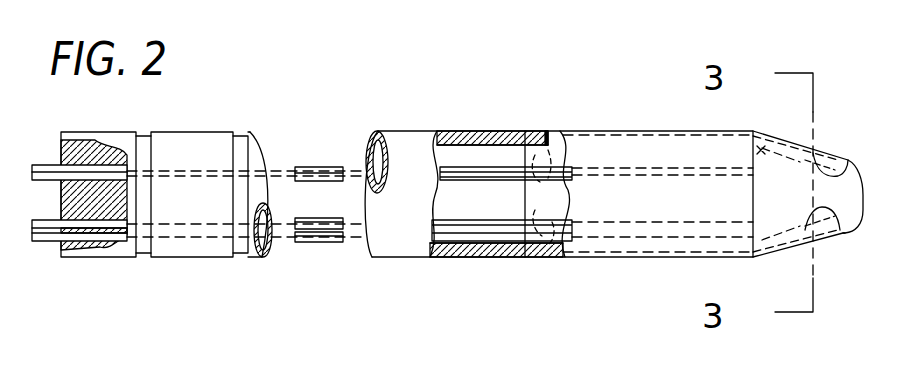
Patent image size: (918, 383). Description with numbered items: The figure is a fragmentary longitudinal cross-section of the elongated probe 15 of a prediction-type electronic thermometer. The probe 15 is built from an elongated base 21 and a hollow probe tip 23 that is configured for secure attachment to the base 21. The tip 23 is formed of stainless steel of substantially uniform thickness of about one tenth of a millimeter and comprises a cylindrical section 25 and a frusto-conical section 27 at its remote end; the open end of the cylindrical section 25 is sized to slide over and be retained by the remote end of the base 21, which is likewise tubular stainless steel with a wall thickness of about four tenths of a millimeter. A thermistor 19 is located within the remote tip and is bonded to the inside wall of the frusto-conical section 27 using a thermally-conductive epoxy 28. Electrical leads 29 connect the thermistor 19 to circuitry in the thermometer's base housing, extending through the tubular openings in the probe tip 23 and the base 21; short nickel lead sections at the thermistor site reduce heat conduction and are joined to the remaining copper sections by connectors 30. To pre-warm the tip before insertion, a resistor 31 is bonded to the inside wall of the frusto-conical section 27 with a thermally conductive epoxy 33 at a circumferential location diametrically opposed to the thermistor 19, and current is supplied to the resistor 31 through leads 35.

The elongated probe 15 is at (208, 336).
The thermistor 19 is at (825, 235).
The elongated base 21 is at (455, 131).
The hollow probe tip 23 is at (541, 118).
The cylindrical section 25 is at (503, 131).
The frusto-conical section 27 is at (800, 140).
The thermally-conductive epoxy 28 is at (830, 233).
The electrical leads 29 is at (562, 258).
The connectors 30 is at (313, 167).
The resistor 31 is at (810, 158).
The thermally conductive epoxy 33 is at (843, 165).
The leads 35 is at (558, 130).